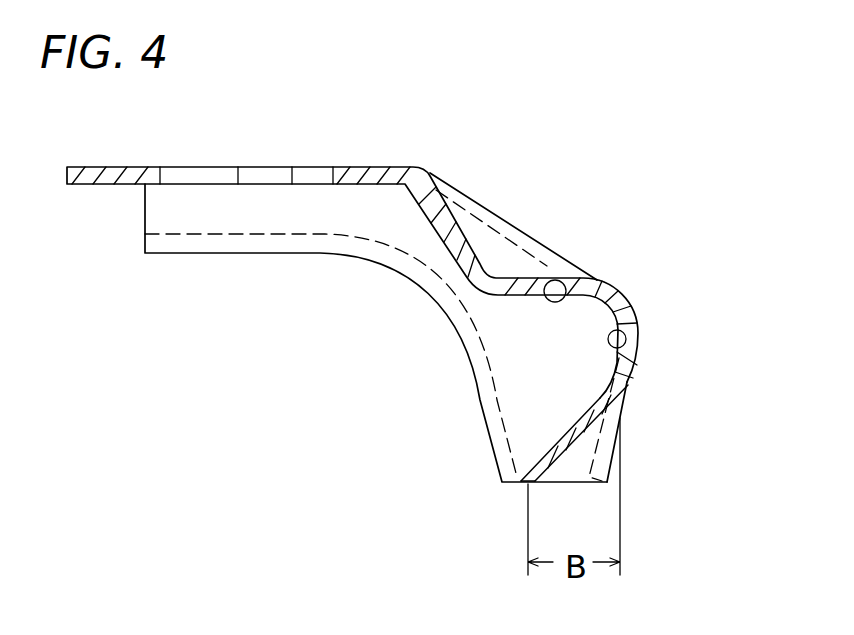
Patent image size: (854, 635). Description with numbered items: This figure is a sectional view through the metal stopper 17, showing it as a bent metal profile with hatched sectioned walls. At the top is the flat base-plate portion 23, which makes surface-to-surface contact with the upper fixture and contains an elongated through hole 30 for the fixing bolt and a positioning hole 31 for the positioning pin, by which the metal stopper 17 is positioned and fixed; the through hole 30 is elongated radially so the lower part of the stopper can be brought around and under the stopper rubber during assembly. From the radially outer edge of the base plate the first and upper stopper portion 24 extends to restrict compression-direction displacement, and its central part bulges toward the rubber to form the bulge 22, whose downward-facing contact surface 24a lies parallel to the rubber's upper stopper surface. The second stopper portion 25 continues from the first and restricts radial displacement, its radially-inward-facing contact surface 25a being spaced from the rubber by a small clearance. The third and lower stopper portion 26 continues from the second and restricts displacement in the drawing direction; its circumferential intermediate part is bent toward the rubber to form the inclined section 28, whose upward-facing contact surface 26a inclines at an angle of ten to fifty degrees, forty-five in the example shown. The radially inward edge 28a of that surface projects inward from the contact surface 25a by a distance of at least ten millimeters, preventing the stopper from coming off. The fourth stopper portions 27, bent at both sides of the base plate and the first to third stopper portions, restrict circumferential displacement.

The metal stopper 17 is at (343, 272).
The bulge 22 is at (472, 227).
The flat base-plate portion 23 is at (383, 165).
The first stopper portion 24 is at (497, 222).
The contact surface 24a is at (552, 281).
The second stopper portion 25 is at (632, 308).
The contact surface 25a is at (625, 345).
The third stopper portion 26 is at (613, 420).
The contact surface 26a is at (573, 423).
The fourth stopper portion 27 is at (510, 337).
The inclined section 28 is at (570, 447).
The radially inward edge 28a is at (528, 473).
The elongated through hole 30 is at (182, 172).
The positioning hole 31 is at (305, 172).